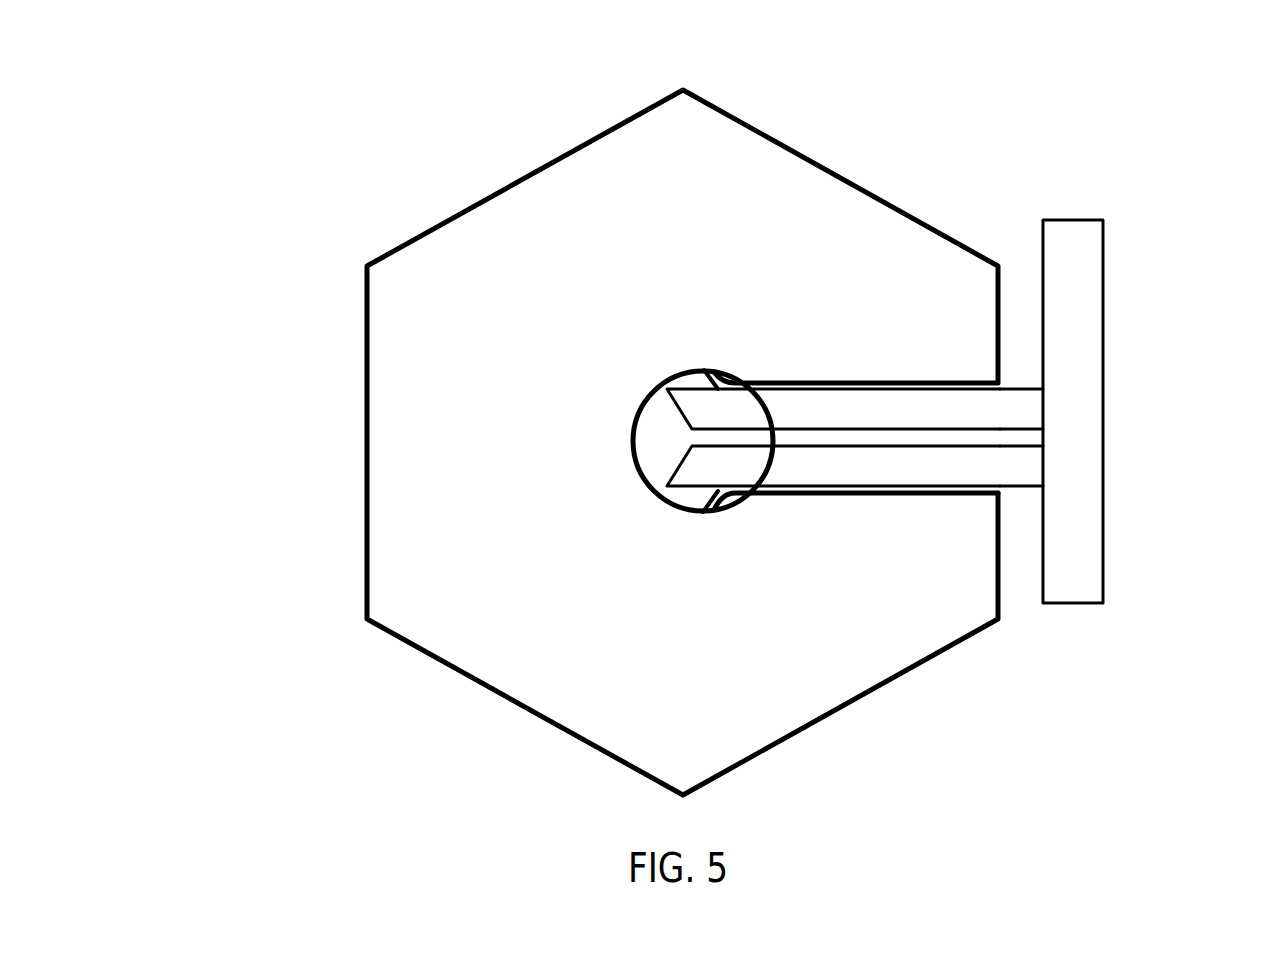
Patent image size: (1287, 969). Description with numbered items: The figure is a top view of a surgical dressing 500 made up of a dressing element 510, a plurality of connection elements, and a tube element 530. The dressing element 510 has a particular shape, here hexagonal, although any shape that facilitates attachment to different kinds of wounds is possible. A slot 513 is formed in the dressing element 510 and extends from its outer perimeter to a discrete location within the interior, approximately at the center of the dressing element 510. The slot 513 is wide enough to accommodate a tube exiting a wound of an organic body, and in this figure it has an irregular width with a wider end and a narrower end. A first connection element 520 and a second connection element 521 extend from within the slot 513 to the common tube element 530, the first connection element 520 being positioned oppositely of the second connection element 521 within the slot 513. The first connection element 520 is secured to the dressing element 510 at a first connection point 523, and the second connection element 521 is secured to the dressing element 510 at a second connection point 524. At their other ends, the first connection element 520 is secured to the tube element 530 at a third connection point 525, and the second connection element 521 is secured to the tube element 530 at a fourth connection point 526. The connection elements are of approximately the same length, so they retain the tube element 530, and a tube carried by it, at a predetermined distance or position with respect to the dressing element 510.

The surgical dressing 500 is at (479, 132).
The dressing element 510 is at (397, 410).
The slot 513 is at (660, 455).
The first connection element 520 is at (910, 408).
The second connection element 521 is at (758, 467).
The first connection point 523 is at (690, 367).
The second connection point 524 is at (680, 512).
The third connection point 525 is at (1043, 412).
The fourth connection point 526 is at (1043, 477).
The tube element 530 is at (1073, 583).